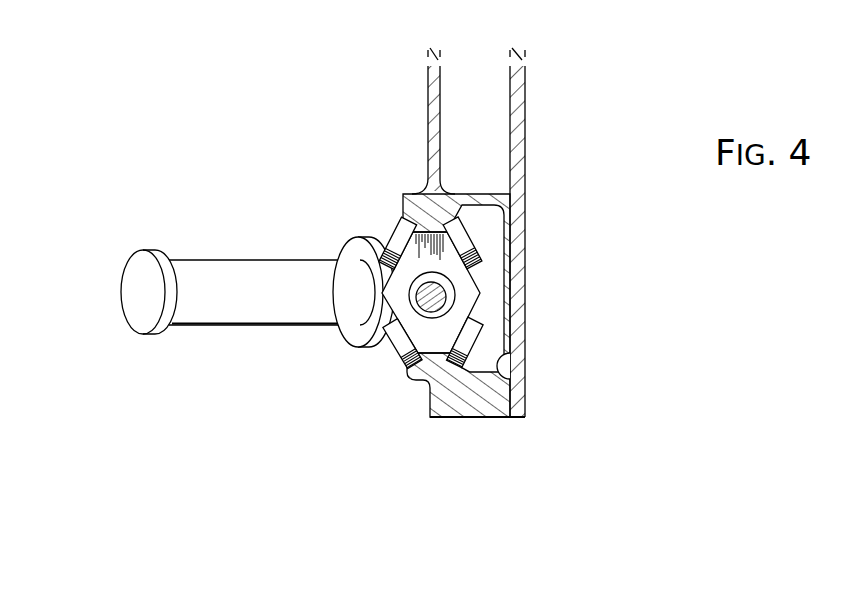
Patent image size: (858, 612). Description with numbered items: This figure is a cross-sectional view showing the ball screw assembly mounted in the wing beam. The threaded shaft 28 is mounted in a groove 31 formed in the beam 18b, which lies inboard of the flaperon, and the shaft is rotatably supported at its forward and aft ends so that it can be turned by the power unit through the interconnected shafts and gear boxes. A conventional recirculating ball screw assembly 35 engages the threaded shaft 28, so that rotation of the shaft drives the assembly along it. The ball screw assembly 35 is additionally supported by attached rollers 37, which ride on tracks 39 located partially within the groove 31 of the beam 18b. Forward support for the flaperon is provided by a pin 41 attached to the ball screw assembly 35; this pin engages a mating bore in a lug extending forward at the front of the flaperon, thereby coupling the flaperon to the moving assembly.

The beam 18b is at (428, 148).
The threaded shaft 28 is at (446, 294).
The groove 31 is at (505, 369).
The recirculating ball screw assembly 35 is at (346, 246).
The rollers 37 is at (484, 254).
The tracks 39 is at (403, 227).
The pin 41 is at (226, 258).